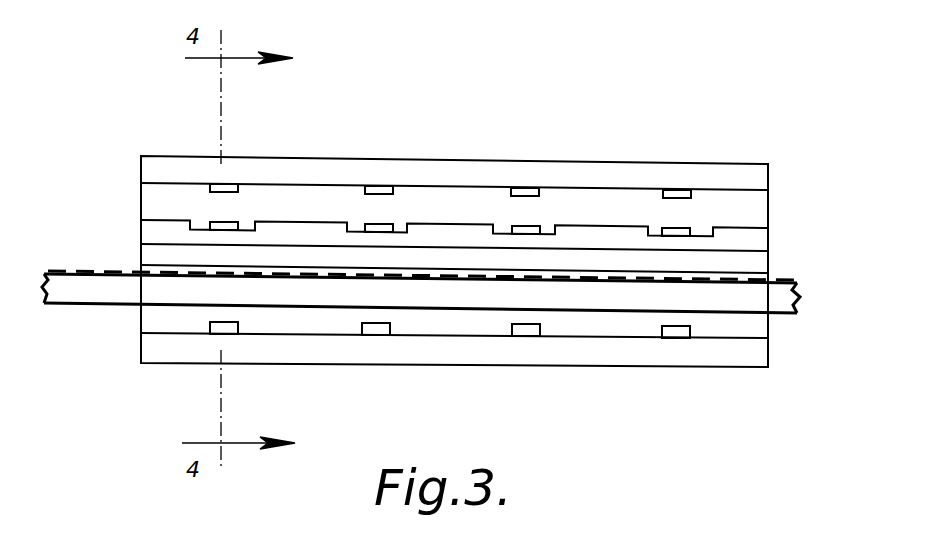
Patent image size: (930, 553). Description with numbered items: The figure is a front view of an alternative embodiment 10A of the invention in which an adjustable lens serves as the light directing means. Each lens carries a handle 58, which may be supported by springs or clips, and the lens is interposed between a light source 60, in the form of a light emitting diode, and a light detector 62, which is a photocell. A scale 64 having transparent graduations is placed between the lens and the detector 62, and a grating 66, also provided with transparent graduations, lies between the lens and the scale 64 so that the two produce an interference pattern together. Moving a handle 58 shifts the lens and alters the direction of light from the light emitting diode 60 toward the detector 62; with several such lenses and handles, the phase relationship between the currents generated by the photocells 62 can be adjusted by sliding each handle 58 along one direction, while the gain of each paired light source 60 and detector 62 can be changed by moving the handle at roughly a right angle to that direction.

The alternative embodiment 10A is at (667, 147).
The handle 58 is at (673, 228).
The light source 60 is at (225, 184).
The light detector 62 is at (232, 328).
The scale 64 is at (778, 307).
The grating 66 is at (758, 262).